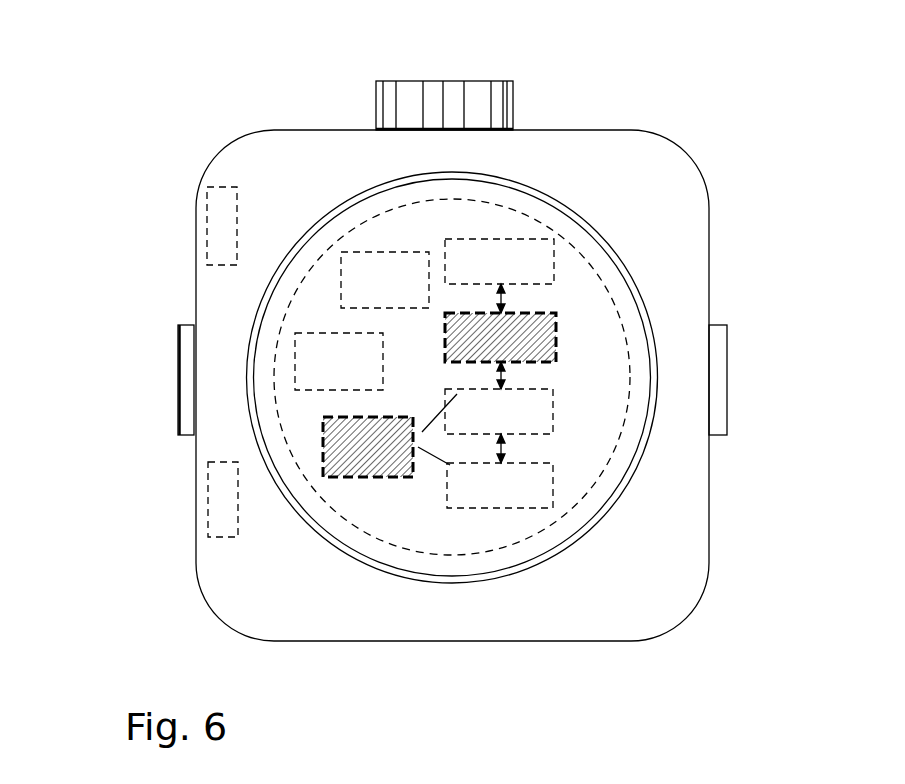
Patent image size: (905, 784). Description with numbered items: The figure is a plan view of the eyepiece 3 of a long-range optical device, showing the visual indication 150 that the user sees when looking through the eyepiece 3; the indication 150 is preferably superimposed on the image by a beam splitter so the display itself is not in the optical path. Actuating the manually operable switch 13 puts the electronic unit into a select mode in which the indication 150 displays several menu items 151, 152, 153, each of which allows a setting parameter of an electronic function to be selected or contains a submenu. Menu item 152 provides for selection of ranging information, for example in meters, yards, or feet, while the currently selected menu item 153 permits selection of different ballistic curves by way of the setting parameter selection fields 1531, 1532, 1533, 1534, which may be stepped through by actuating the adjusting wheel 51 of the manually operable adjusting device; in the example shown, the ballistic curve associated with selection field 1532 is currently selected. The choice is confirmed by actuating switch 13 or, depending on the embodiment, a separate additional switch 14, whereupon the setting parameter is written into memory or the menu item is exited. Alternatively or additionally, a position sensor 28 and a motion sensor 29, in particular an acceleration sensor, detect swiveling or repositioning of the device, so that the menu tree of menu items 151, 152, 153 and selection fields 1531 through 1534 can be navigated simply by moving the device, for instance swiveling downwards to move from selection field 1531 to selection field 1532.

The eyepiece 3 is at (593, 228).
The manually operable switch 13 is at (178, 350).
The additional switch 14 is at (727, 344).
The position sensor 28 is at (222, 187).
The motion sensor 29 is at (217, 537).
The adjusting wheel 51 is at (512, 80).
The visual indication 150 is at (445, 555).
The menu item 151 is at (385, 280).
The menu item 152 is at (339, 361).
The menu item 153 is at (390, 435).
The setting parameter selection field 1531 is at (499, 261).
The setting parameter selection field 1532 is at (500, 337).
The setting parameter selection field 1533 is at (499, 411).
The setting parameter selection field 1534 is at (500, 485).